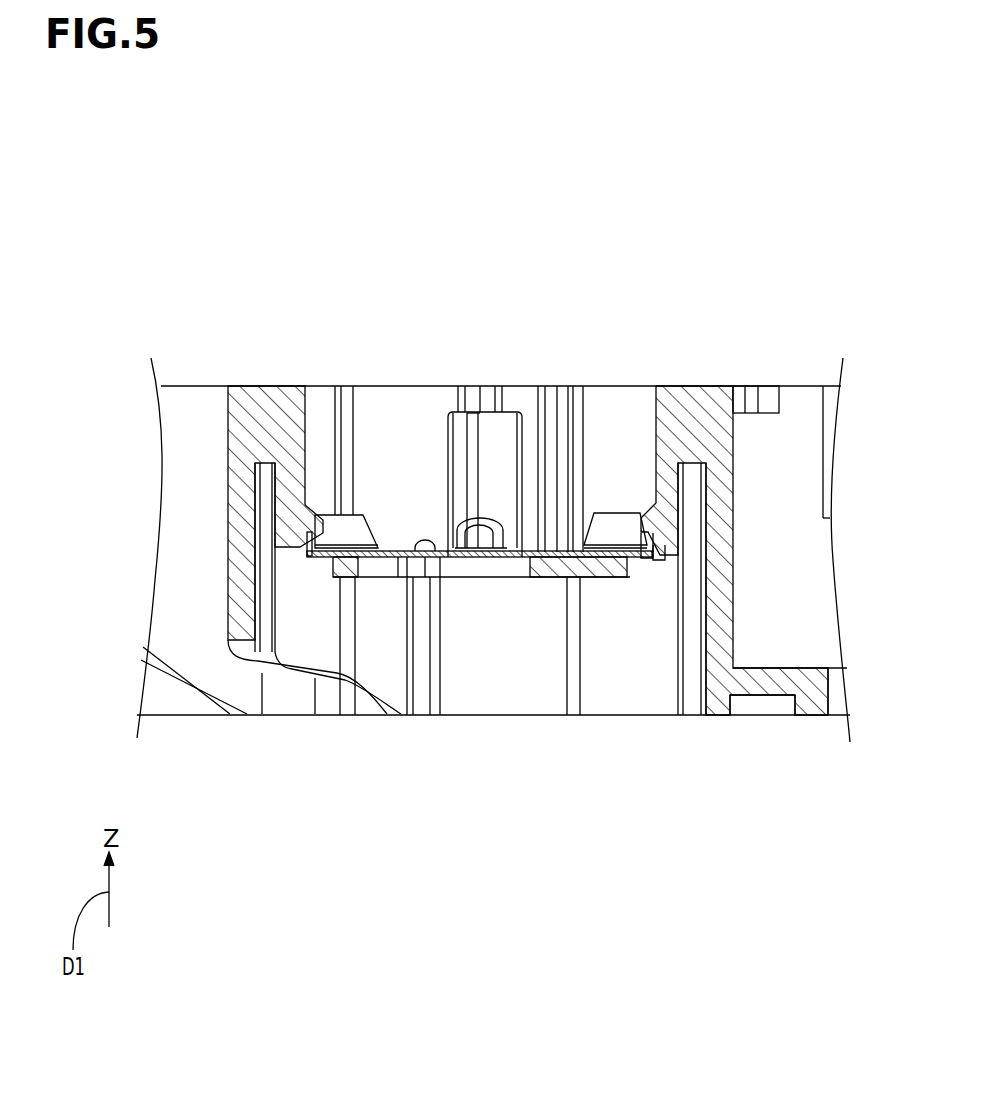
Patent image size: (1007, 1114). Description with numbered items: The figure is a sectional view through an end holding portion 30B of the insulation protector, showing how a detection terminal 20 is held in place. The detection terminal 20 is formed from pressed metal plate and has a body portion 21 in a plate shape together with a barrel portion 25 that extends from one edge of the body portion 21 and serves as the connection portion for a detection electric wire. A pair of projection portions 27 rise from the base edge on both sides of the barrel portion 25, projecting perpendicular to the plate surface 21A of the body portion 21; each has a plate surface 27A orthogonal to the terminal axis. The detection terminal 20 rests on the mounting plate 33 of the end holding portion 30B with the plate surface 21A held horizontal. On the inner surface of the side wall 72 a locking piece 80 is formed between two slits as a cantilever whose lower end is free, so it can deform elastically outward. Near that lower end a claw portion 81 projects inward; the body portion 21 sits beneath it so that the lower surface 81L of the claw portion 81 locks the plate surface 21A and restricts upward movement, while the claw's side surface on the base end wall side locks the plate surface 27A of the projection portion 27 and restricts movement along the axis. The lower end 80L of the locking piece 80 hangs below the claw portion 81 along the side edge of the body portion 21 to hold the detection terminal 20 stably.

The detection terminal 20 is at (398, 557).
The body portion 21 is at (479, 662).
The plate surface 21A is at (440, 558).
The barrel portion 25 is at (482, 543).
The projection portion 27 is at (481, 427).
The plate surface of projection portion 27A is at (613, 523).
The end holding portion 30B is at (408, 406).
The mounting plate 33 is at (345, 570).
The side wall 72 is at (264, 420).
The locking piece 80 is at (665, 488).
The lower end of locking piece 80L is at (663, 560).
The claw portion 81 is at (650, 523).
The lower surface of claw portion 81L is at (310, 557).